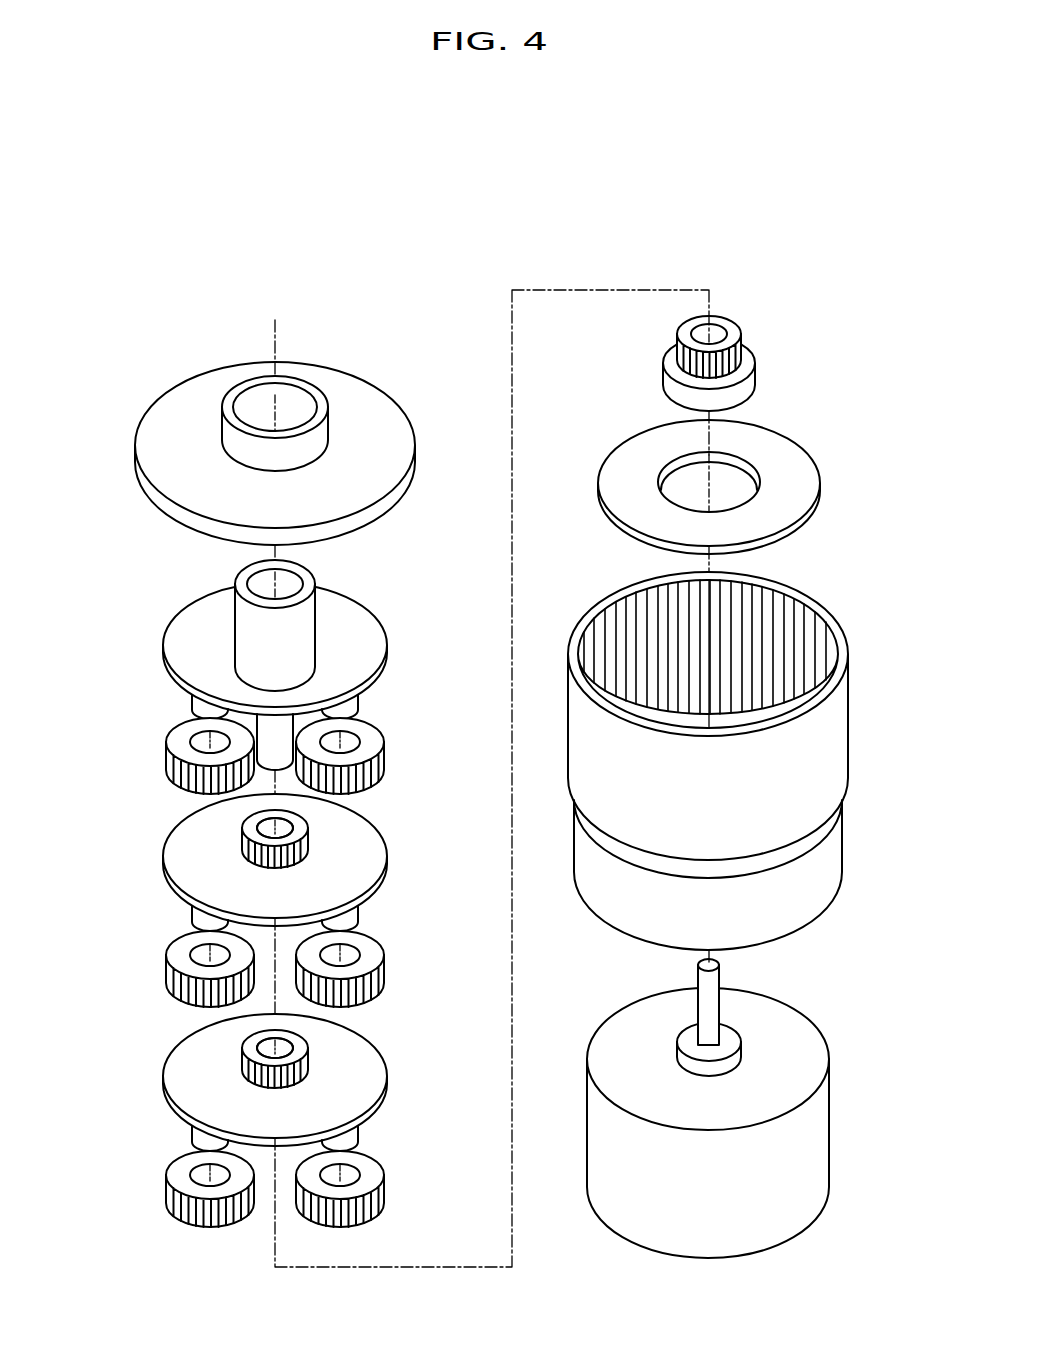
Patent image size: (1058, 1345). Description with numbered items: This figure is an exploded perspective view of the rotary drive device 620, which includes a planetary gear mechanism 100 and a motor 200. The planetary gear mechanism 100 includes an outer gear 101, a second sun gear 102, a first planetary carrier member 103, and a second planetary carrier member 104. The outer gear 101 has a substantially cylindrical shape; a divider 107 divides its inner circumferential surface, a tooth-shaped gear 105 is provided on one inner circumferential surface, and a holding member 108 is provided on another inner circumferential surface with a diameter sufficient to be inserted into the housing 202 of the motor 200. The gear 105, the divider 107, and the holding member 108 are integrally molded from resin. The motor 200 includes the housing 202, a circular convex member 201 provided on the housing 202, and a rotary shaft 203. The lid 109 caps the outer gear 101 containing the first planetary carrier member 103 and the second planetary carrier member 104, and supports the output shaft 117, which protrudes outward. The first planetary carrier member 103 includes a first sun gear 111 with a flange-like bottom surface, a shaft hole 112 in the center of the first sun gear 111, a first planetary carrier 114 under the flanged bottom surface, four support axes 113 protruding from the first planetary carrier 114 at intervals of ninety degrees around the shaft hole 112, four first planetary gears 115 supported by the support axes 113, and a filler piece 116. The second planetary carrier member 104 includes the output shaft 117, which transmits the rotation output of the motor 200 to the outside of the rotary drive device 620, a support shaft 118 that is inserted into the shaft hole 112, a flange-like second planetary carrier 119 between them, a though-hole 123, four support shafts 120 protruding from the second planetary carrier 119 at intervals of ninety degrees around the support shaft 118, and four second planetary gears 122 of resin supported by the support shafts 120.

The rotary drive device 620 is at (333, 163).
The planetary gear mechanism 100 is at (443, 265).
The lid 109 is at (160, 412).
The second sun gear 102 is at (747, 352).
The filler piece 116 is at (820, 475).
The though-hole 123 is at (258, 577).
The second planetary carrier member 104 is at (392, 616).
The output shaft 117 is at (235, 614).
The second planetary carrier 119 is at (192, 656).
The support shaft 120 is at (192, 704).
The support shaft 118 is at (268, 745).
The second planetary gear 122 is at (175, 782).
The shaft hole 112 is at (262, 822).
The first planetary carrier member 103 is at (391, 831).
The first sun gear 111 is at (252, 837).
The first planetary carrier 114 is at (192, 883).
The support axis 113 is at (192, 905).
The first planetary gear 115 is at (165, 965).
The gear 105 is at (797, 642).
The divider 107 is at (722, 722).
The outer gear 101 is at (840, 742).
The holding member 108 is at (835, 908).
The rotary shaft 203 is at (713, 1008).
The circular convex member 201 is at (733, 1058).
The housing 202 is at (812, 1108).
The motor 200 is at (827, 1165).